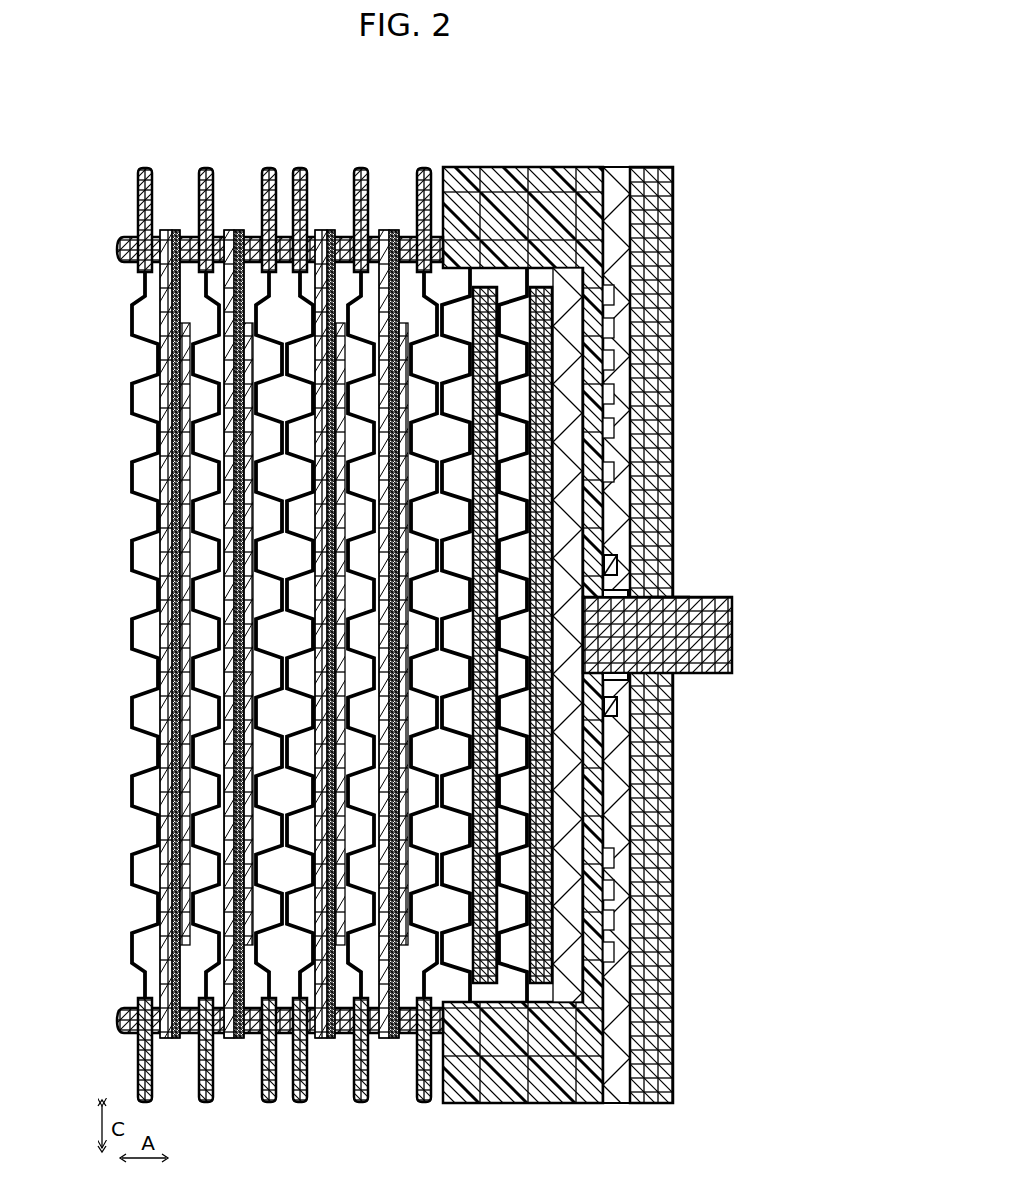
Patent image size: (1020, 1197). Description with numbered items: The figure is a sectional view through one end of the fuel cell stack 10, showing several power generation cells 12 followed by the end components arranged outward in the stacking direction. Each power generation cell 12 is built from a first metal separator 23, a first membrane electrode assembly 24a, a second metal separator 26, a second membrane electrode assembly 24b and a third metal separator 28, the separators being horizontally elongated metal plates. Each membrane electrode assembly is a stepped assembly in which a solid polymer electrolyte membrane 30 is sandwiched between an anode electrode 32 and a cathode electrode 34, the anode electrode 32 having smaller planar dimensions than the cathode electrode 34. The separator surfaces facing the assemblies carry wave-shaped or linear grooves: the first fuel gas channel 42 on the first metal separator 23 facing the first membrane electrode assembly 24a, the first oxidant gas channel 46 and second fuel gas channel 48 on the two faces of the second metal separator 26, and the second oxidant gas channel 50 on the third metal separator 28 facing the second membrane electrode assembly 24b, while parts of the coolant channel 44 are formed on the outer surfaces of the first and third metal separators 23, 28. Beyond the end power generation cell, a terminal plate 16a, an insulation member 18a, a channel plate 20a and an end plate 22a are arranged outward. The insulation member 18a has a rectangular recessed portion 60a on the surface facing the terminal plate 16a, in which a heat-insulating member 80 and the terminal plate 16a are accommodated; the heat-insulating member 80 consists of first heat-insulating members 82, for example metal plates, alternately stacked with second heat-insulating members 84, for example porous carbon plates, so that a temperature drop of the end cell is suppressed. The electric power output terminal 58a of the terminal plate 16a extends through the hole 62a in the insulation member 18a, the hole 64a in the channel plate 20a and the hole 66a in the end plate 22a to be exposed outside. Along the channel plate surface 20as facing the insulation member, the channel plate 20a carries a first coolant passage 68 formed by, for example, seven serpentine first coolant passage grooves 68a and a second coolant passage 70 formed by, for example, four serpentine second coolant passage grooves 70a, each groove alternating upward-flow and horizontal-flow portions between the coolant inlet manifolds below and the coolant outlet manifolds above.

The fuel cell stack 10 is at (667, 88).
The power generation cell 12 is at (275, 123).
The terminal plate 16a is at (568, 264).
The insulation member 18a is at (594, 163).
The channel plate 20a is at (618, 163).
The inner surface of end plate 20as is at (603, 218).
The end plate 22a is at (660, 163).
The first metal separator 23 is at (269, 164).
The first membrane electrode assembly 24a is at (231, 228).
The second membrane electrode assembly 24b is at (168, 228).
The second metal separator 26 is at (206, 164).
The third metal separator 28 is at (145, 164).
The solid polymer electrolyte membrane 30 is at (333, 1040).
The anode electrode 32 is at (340, 946).
The cathode electrode 34 is at (325, 1040).
The first fuel gas channel 42 is at (432, 641).
The coolant channel 44 is at (280, 548).
The first oxidant gas channel 46 is at (375, 613).
The second fuel gas channel 48 is at (360, 366).
The second oxidant gas channel 50 is at (305, 363).
The electric power output terminal 58a is at (717, 667).
The recessed portion 60a is at (580, 374).
The hole 62a is at (596, 674).
The hole 64a is at (622, 596).
The hole 66a is at (667, 602).
The first coolant passage 68 is at (616, 328).
The first coolant passage grooves 68a is at (613, 293).
The second coolant passage 70 is at (616, 915).
The second coolant passage grooves 70a is at (614, 862).
The heat-insulating member 80 is at (445, 105).
The first heat-insulating members 82 is at (457, 296).
The second heat-insulating members 84 is at (484, 286).